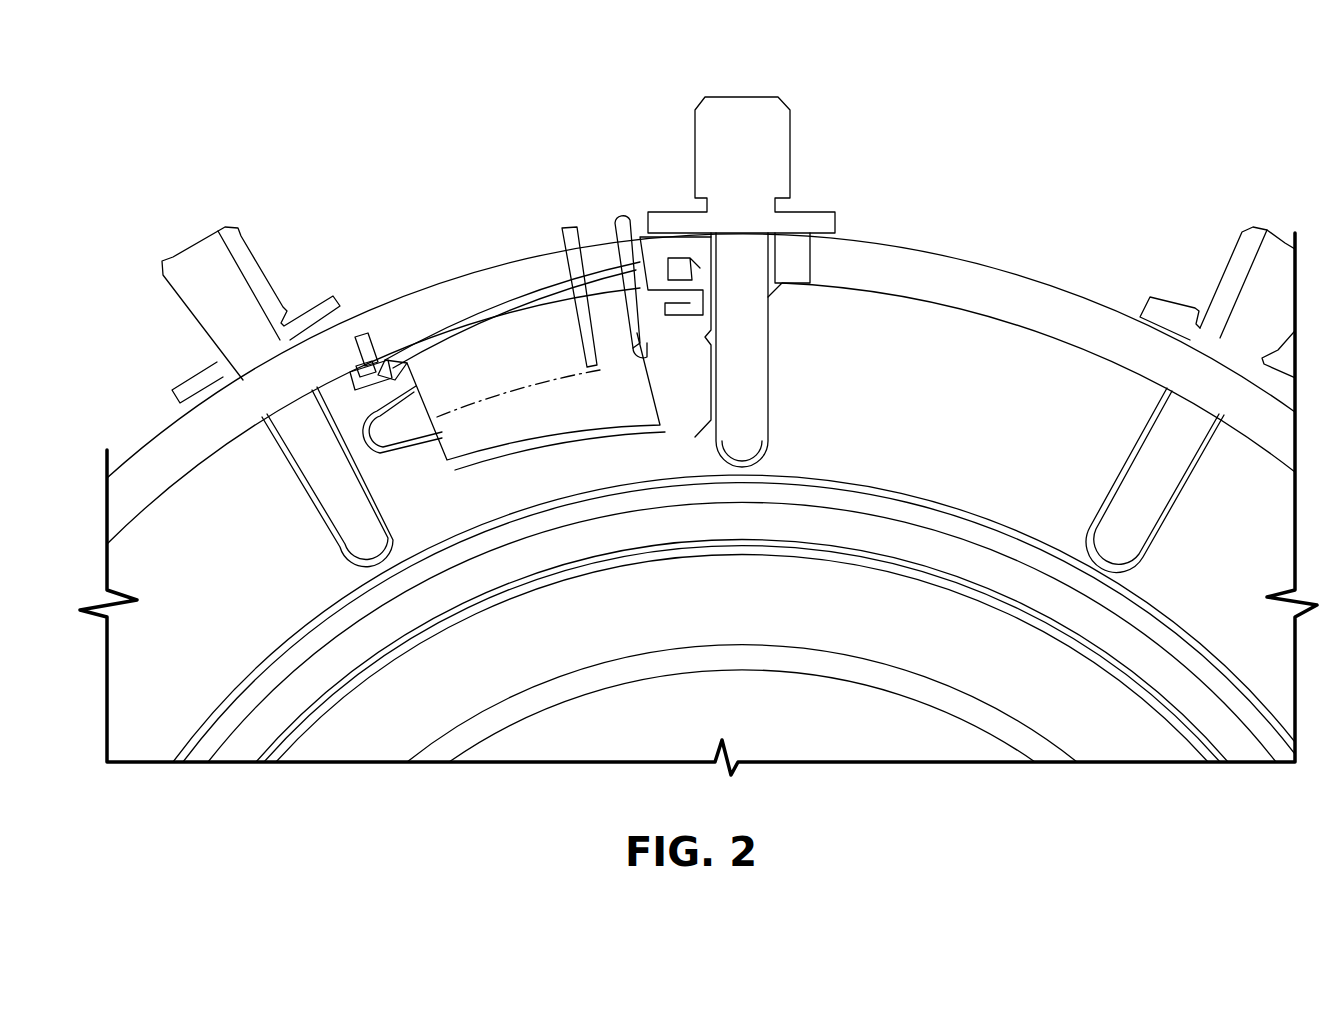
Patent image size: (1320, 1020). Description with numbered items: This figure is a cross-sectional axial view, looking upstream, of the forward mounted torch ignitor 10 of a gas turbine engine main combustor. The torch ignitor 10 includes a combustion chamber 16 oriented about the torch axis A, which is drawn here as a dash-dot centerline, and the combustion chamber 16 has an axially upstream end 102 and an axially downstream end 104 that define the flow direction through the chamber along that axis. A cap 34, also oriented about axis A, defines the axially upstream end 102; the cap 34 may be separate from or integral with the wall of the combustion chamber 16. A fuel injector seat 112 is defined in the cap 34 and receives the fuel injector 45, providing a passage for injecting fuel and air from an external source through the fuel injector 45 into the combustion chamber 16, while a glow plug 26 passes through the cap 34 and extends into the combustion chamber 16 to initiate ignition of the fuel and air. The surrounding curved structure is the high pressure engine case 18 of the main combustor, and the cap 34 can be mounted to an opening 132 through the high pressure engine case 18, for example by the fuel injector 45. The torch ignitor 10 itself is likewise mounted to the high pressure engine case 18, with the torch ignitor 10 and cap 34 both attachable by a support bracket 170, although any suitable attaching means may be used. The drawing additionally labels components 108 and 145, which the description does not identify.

The torch ignitor 10 is at (312, 188).
The combustion chamber 16 is at (483, 377).
The high pressure engine case 18 is at (833, 258).
The glow plug 26 is at (570, 277).
The cap 34 is at (723, 333).
The fuel injector 45 is at (623, 218).
The axially upstream end 102 is at (603, 263).
The axially downstream end 104 is at (397, 340).
The clip 108 is at (387, 393).
The fuel injector seat 112 is at (638, 347).
The opening 132 is at (640, 237).
The bolt 145 is at (770, 118).
The support bracket 170 is at (375, 378).